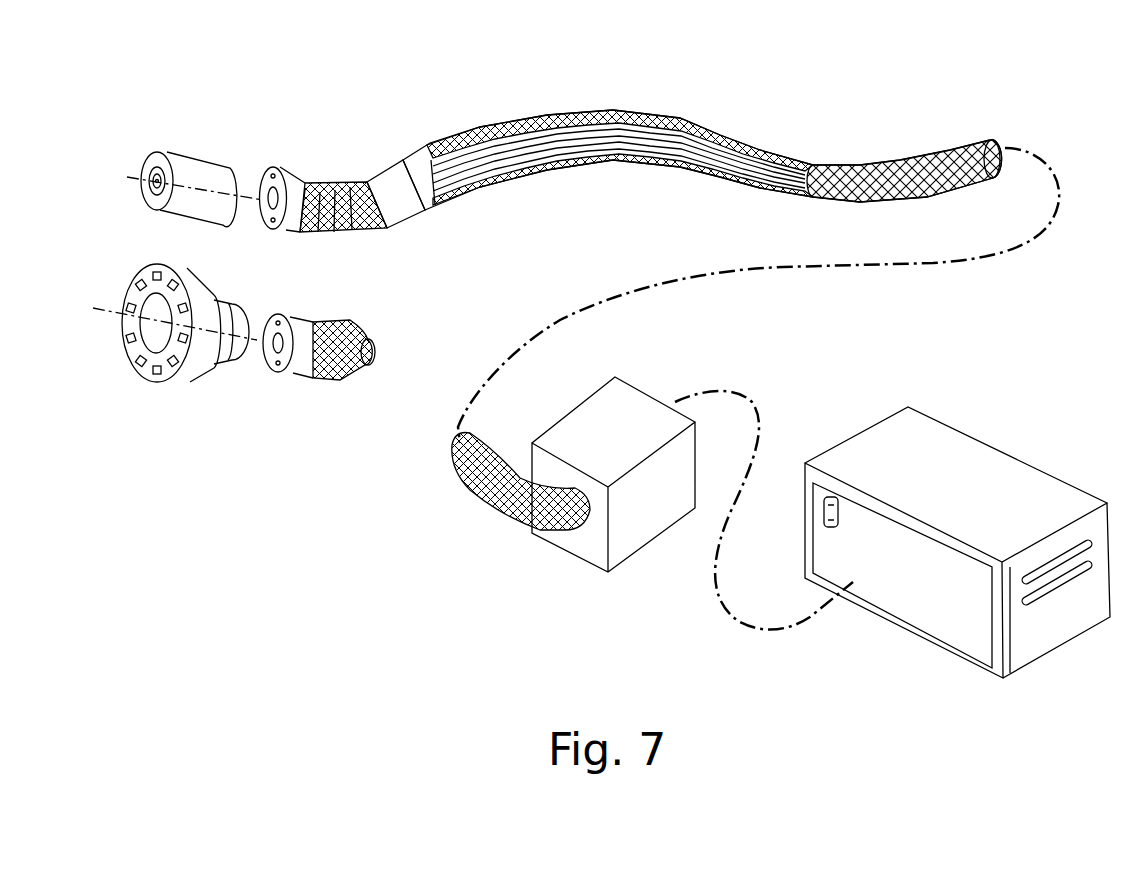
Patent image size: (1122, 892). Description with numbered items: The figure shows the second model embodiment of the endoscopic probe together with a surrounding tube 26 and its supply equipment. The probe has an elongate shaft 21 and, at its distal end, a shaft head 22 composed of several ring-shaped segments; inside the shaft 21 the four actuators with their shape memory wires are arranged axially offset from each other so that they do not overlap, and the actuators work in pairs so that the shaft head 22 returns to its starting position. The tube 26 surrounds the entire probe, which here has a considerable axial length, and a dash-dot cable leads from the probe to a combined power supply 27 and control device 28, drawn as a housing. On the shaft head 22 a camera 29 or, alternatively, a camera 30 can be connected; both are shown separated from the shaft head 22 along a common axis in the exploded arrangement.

The shaft 21 is at (913, 153).
The shaft head 22 is at (330, 186).
The tube 26 is at (820, 167).
The power supply 27 is at (900, 598).
The control device 28 is at (945, 440).
The camera 29 is at (200, 172).
The camera 30 is at (190, 380).